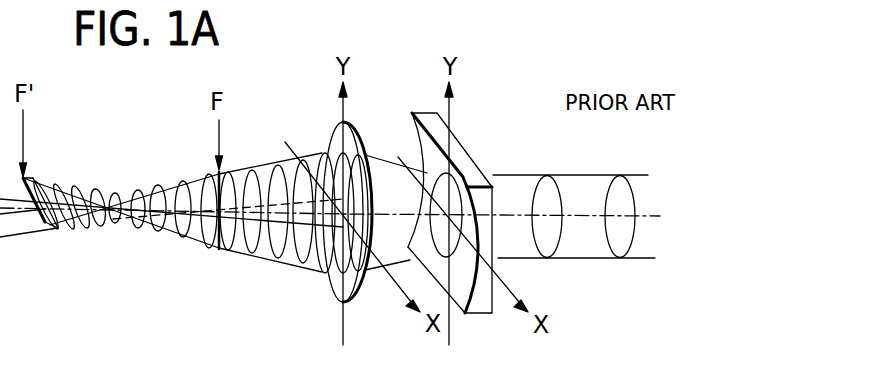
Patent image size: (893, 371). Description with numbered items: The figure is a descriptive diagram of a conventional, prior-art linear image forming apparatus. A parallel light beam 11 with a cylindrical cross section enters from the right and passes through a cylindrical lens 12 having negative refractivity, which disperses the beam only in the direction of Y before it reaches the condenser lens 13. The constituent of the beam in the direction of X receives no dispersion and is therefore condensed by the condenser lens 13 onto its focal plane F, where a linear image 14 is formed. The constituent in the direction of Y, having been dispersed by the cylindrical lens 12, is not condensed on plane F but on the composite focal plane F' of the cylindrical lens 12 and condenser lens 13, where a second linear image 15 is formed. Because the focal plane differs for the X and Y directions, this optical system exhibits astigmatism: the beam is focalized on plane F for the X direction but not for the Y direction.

The parallel light beam 11 is at (526, 175).
The cylindrical lens 12 is at (463, 143).
The condenser lens 13 is at (352, 128).
The linear image 14 is at (216, 178).
The linear image 15 is at (26, 178).